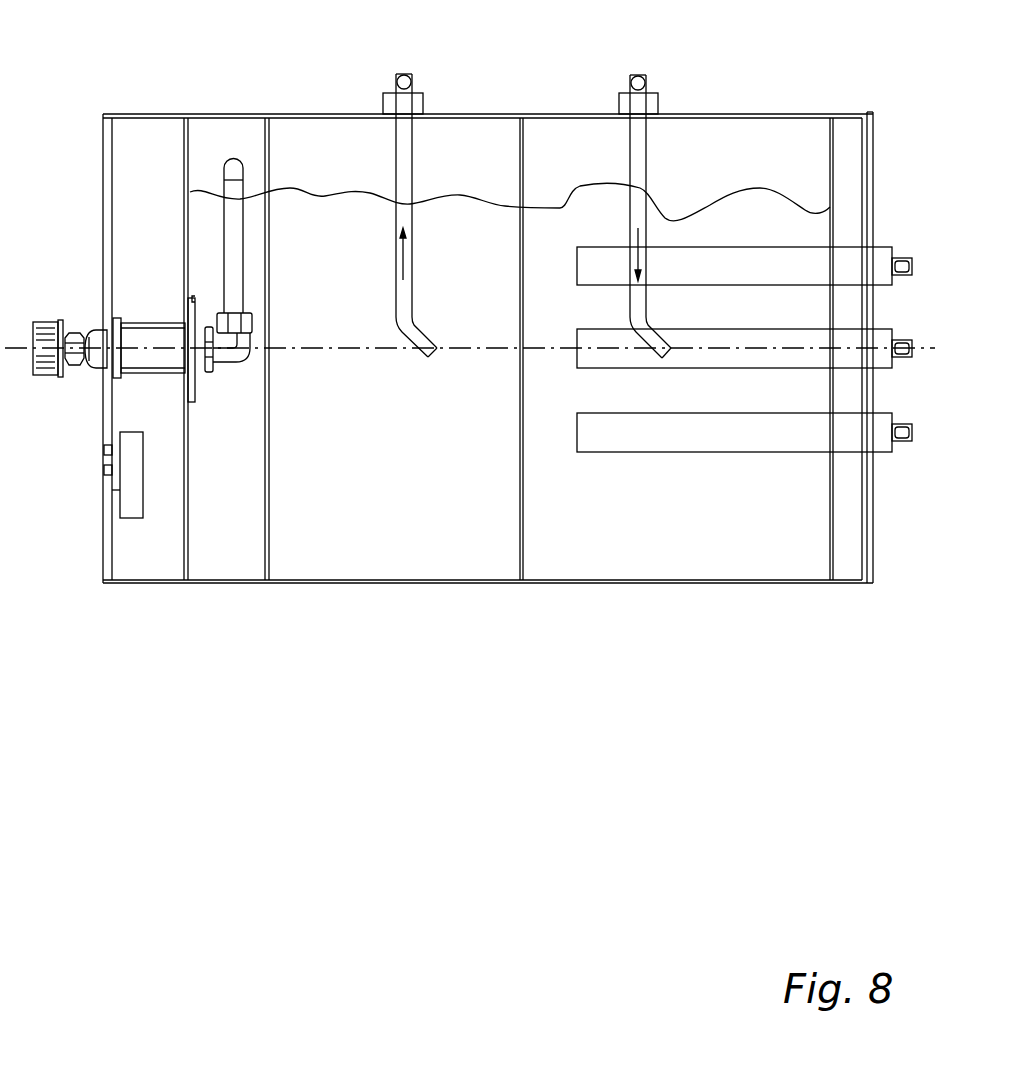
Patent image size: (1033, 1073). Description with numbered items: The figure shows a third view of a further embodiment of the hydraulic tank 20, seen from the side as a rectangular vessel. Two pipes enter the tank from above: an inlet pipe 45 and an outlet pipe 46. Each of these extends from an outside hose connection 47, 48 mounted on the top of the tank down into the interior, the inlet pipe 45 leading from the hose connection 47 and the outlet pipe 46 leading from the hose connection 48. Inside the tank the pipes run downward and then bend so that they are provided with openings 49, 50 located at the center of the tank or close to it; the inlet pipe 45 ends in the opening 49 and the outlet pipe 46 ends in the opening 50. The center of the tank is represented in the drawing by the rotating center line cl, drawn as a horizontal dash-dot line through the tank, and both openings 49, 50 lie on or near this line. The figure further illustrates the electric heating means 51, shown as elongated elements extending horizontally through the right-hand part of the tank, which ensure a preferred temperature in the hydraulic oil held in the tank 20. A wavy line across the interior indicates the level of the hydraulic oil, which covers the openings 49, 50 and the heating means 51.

The hydraulic tank 20 is at (252, 110).
The inlet pipe 45 is at (393, 262).
The outlet pipe 46 is at (627, 307).
The outside hose connection 47 is at (395, 83).
The outside hose connection 48 is at (628, 82).
The opening 49 is at (435, 352).
The opening 50 is at (668, 356).
The electric heating means 51 is at (707, 438).
The rotating center line cl is at (365, 350).